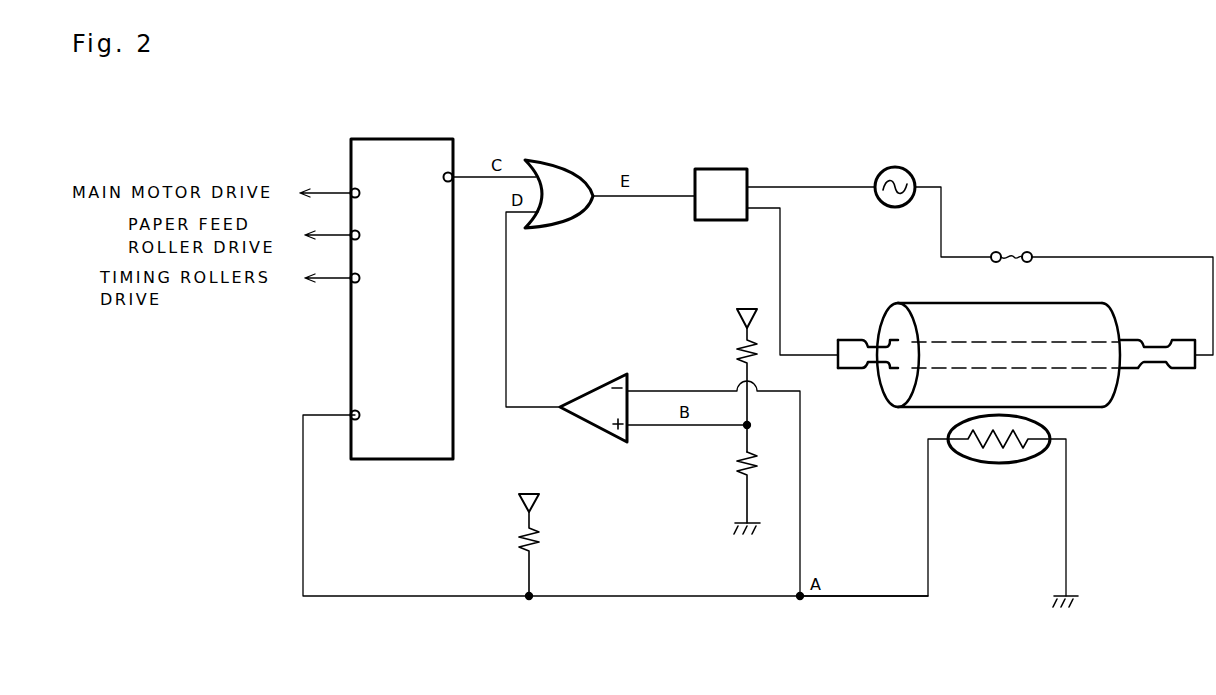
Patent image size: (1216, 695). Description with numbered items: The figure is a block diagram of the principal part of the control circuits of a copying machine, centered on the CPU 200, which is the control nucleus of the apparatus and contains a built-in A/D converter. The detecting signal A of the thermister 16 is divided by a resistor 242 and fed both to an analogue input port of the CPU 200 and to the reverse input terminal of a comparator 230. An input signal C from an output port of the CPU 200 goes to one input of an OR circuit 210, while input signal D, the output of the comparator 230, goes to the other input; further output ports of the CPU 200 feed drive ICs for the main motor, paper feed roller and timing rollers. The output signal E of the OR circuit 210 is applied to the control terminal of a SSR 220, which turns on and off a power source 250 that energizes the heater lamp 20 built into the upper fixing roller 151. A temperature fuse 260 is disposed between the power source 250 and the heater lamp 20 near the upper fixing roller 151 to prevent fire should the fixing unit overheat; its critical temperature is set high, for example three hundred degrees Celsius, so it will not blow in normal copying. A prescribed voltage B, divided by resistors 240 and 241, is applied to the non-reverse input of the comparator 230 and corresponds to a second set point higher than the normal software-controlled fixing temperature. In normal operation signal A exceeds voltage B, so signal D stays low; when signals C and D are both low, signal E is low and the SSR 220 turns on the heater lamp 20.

The CPU 200 is at (432, 139).
The OR circuit 210 is at (565, 165).
The SSR 220 is at (733, 168).
The comparator 230 is at (604, 386).
The resistor 240 is at (732, 350).
The resistor 241 is at (733, 467).
The resistor 242 is at (548, 543).
The power source 250 is at (900, 170).
The temperature fuse 260 is at (1012, 251).
The heater lamp 20 is at (1183, 371).
The upper fixing roller 151 is at (931, 303).
The thermister 16 is at (990, 463).